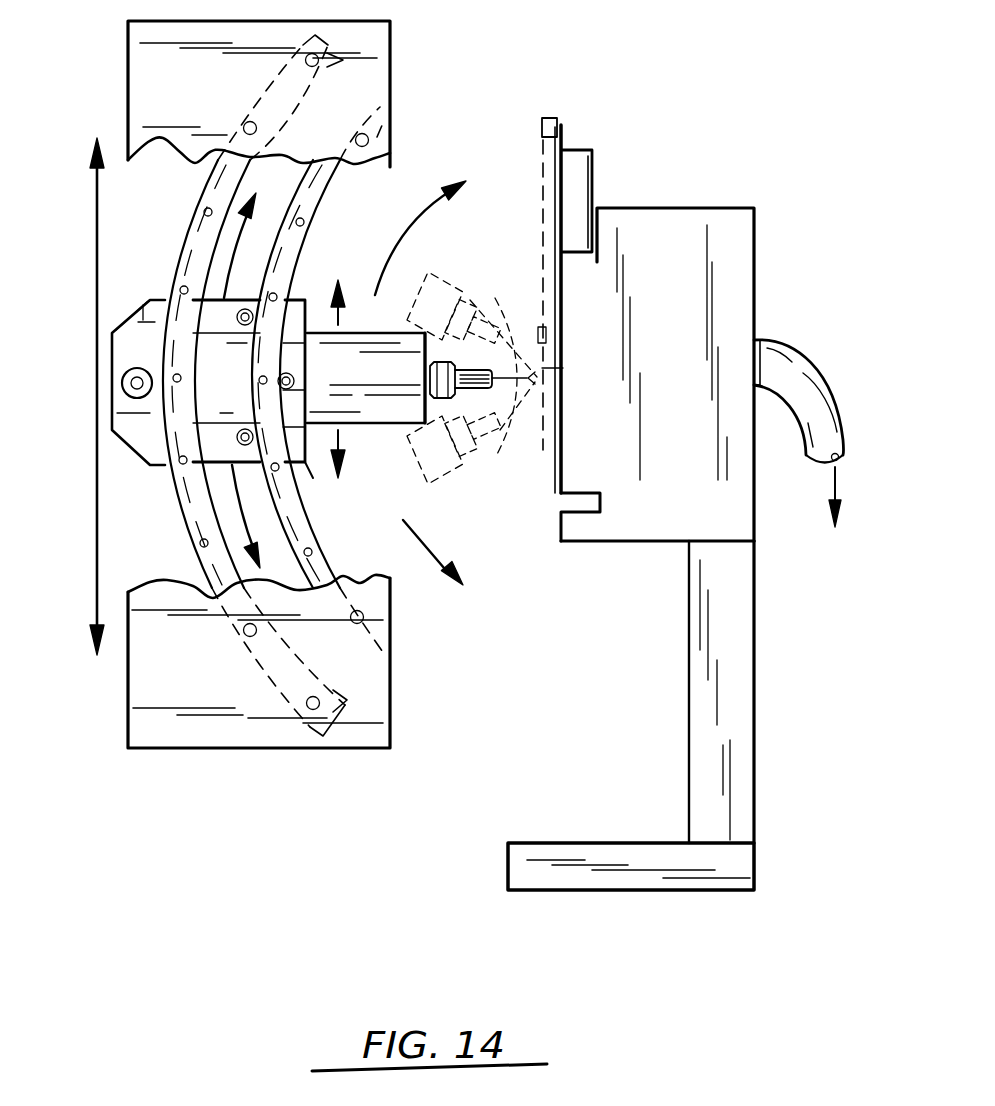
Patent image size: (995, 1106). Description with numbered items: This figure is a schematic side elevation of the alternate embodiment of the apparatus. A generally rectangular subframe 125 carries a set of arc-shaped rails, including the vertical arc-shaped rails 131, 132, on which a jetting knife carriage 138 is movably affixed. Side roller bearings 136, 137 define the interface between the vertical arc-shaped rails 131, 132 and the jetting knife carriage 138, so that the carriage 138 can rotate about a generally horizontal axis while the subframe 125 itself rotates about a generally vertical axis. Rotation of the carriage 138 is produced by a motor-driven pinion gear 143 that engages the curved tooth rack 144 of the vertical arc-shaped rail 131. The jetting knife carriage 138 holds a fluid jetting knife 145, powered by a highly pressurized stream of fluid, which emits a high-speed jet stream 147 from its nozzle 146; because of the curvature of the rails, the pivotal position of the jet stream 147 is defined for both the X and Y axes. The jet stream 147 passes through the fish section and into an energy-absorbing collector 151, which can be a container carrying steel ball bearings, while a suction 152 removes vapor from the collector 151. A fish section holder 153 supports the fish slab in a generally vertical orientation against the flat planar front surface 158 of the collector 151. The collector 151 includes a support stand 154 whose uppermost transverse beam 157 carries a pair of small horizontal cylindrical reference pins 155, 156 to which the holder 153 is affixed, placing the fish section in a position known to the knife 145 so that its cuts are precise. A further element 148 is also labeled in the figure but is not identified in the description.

The subframe 125 is at (205, 93).
The vertical arc-shaped rail 131 is at (215, 189).
The vertical arc-shaped rail 132 is at (308, 212).
The side roller bearing 136 is at (288, 389).
The side roller bearing 137 is at (253, 440).
The jetting knife carriage 138 is at (147, 300).
The pinion gear 143 is at (122, 388).
The curved tooth rack 144 is at (168, 480).
The jetting knife 145 is at (497, 247).
The nozzle 146 is at (526, 312).
The jet stream 147 is at (470, 480).
The pivot axis 148 is at (556, 364).
The energy-absorbing collector 151 is at (676, 207).
The suction 152 is at (797, 372).
The fish section holder 153 is at (542, 212).
The support stand 154 is at (757, 722).
The reference pin 155 is at (540, 129).
The reference pin 156 is at (542, 150).
The transverse beam 157 is at (561, 128).
The front surface 158 is at (552, 477).